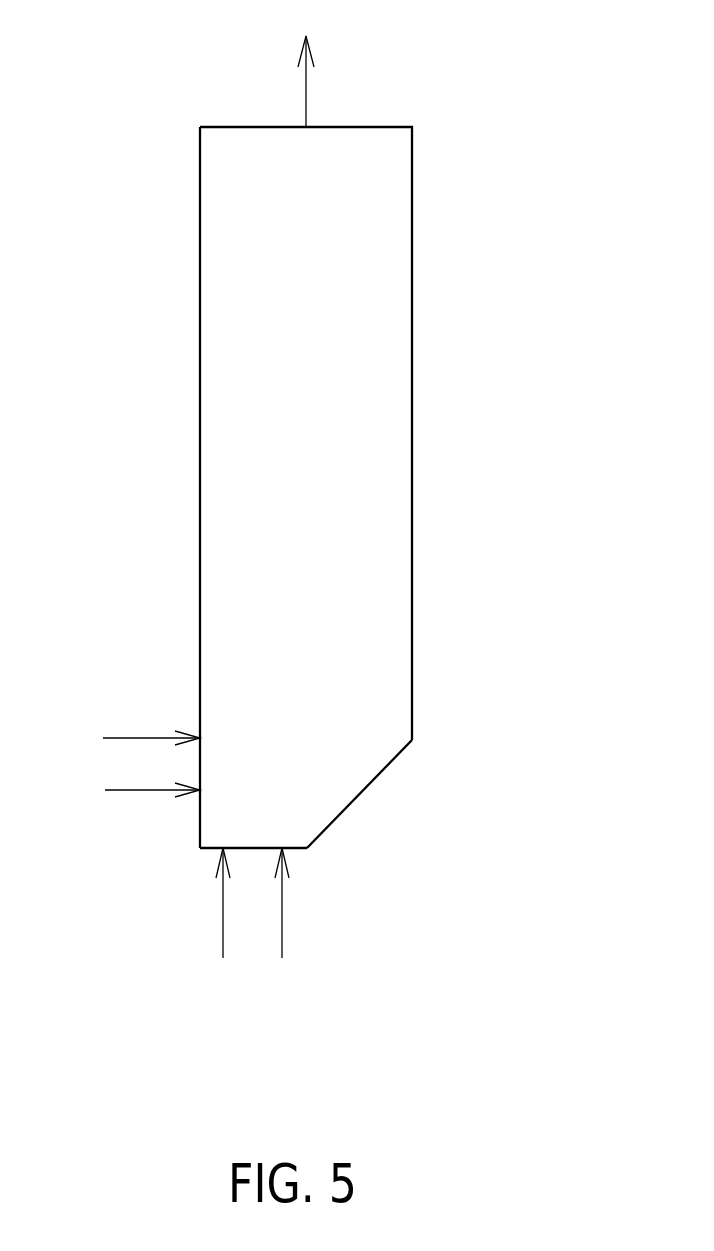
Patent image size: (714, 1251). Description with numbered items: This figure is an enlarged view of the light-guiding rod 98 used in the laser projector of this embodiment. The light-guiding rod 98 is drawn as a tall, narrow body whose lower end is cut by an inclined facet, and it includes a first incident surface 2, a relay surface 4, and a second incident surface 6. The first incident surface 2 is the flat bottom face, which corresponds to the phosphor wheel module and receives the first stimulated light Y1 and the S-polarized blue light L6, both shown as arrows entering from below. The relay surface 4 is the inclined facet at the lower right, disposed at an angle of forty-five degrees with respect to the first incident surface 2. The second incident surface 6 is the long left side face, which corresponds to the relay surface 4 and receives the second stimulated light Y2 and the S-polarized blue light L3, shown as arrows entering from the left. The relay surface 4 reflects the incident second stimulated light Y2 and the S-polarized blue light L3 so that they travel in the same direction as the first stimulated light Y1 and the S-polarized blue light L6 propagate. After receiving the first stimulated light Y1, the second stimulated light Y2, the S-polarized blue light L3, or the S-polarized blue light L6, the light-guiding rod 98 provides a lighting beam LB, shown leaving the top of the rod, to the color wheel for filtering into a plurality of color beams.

The light-guiding rod 98 is at (284, 240).
The second incident surface 6 is at (200, 670).
The first incident surface 2 is at (255, 847).
The relay surface 4 is at (358, 793).
The lighting beam LB is at (306, 64).
The first stimulated light Y1 is at (221, 923).
The second stimulated light Y2 is at (133, 738).
The S-polarized blue light L3 is at (133, 790).
The S-polarized blue light L6 is at (281, 923).